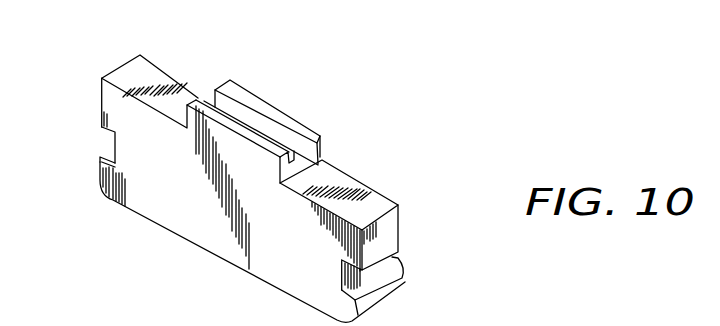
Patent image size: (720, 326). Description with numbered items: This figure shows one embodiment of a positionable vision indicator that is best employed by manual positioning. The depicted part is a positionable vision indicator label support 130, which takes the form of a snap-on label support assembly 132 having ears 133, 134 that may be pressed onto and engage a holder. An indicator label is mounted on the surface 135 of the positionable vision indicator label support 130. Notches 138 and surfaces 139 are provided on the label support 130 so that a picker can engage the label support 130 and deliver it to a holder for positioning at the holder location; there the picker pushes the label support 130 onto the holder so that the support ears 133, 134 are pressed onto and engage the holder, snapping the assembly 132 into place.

The positionable vision indicator label support 130 is at (386, 157).
The snap-on label support assembly 132 is at (123, 63).
The ear 133 is at (198, 97).
The ear 134 is at (280, 105).
The surface 135 is at (148, 218).
The notch 138 is at (110, 142).
The surface 139 is at (100, 98).